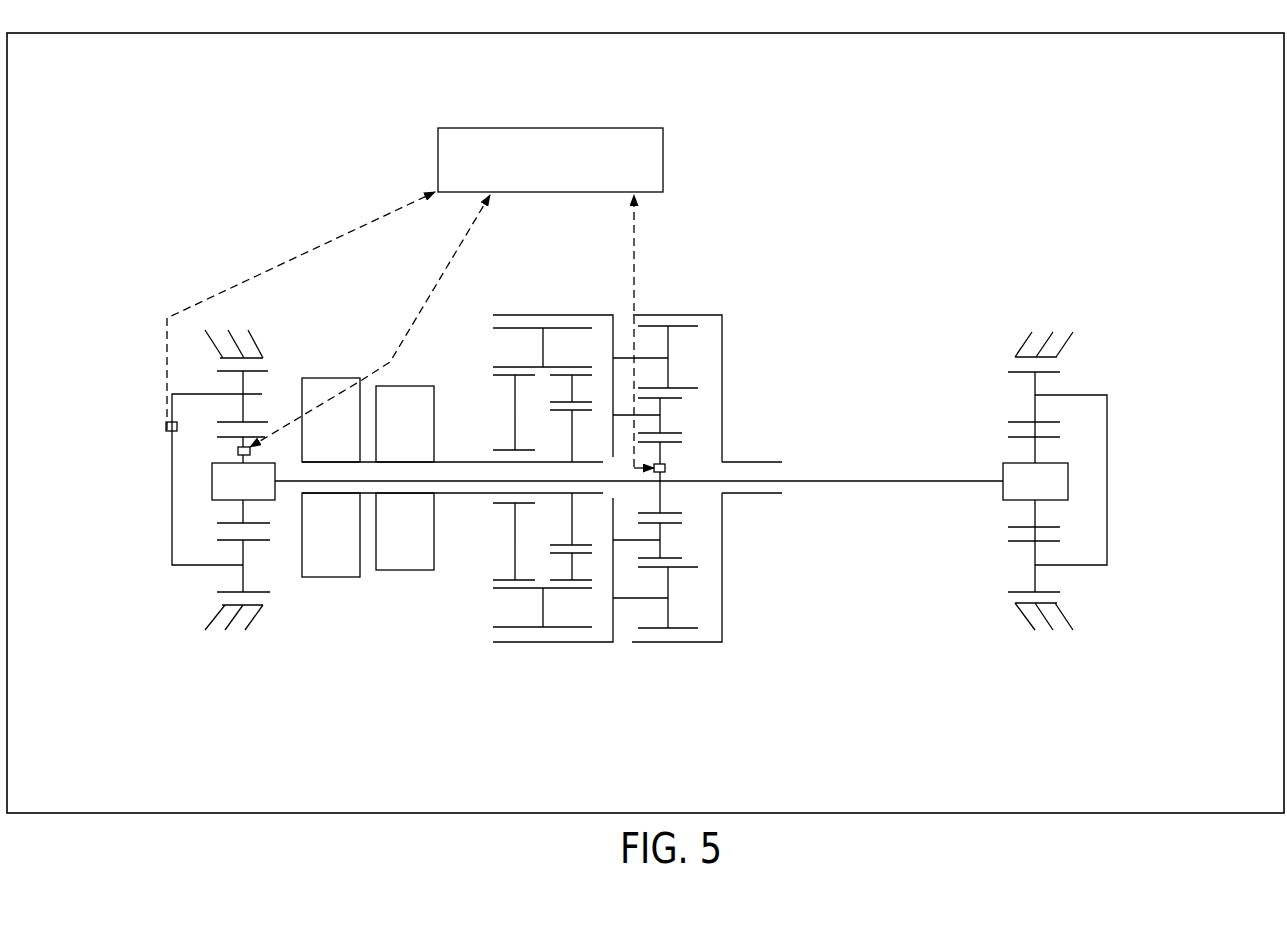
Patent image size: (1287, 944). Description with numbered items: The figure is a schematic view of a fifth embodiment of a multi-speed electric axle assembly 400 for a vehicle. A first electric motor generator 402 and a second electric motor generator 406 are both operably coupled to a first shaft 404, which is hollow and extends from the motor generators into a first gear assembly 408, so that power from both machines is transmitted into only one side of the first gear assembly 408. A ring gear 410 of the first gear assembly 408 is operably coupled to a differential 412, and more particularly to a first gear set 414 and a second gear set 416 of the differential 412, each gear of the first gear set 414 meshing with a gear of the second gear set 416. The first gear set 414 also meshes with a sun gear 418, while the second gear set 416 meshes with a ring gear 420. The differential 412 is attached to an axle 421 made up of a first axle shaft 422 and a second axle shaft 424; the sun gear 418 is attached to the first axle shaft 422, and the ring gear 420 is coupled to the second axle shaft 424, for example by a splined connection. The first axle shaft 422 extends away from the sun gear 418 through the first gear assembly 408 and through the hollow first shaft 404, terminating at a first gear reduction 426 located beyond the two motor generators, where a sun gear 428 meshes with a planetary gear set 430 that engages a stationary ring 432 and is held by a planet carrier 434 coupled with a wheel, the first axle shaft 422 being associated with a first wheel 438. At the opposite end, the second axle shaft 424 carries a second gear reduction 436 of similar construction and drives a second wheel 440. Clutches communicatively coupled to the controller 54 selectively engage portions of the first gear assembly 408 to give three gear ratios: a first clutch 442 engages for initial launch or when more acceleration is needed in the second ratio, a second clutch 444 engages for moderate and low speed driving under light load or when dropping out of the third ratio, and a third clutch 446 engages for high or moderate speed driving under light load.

The controller 54 is at (561, 172).
The multi-speed electric axle assembly 400 is at (1008, 218).
The first electric motor generator 402 is at (325, 578).
The first shaft 404 is at (463, 462).
The second electric motor generator 406 is at (406, 572).
The first gear assembly 408 is at (498, 678).
The ring gear 410 is at (528, 315).
The differential 412 is at (745, 340).
The first gear set 414 is at (670, 402).
The second gear set 416 is at (686, 386).
The sun gear 418 is at (662, 498).
The ring gear 420 is at (672, 315).
The axle 421 is at (822, 450).
The first axle shaft 422 is at (470, 485).
The second axle shaft 424 is at (875, 487).
The first gear reduction 426 is at (155, 355).
The sun gear 428 is at (243, 505).
The planetary gear set 430 is at (245, 418).
The stationary ring 432 is at (252, 343).
The planet carrier 434 is at (172, 460).
The second gear reduction 436 is at (1140, 395).
The first wheel 438 is at (259, 495).
The second wheel 440 is at (1051, 495).
The first clutch 442 is at (666, 470).
The second clutch 444 is at (167, 423).
The third clutch 446 is at (237, 452).